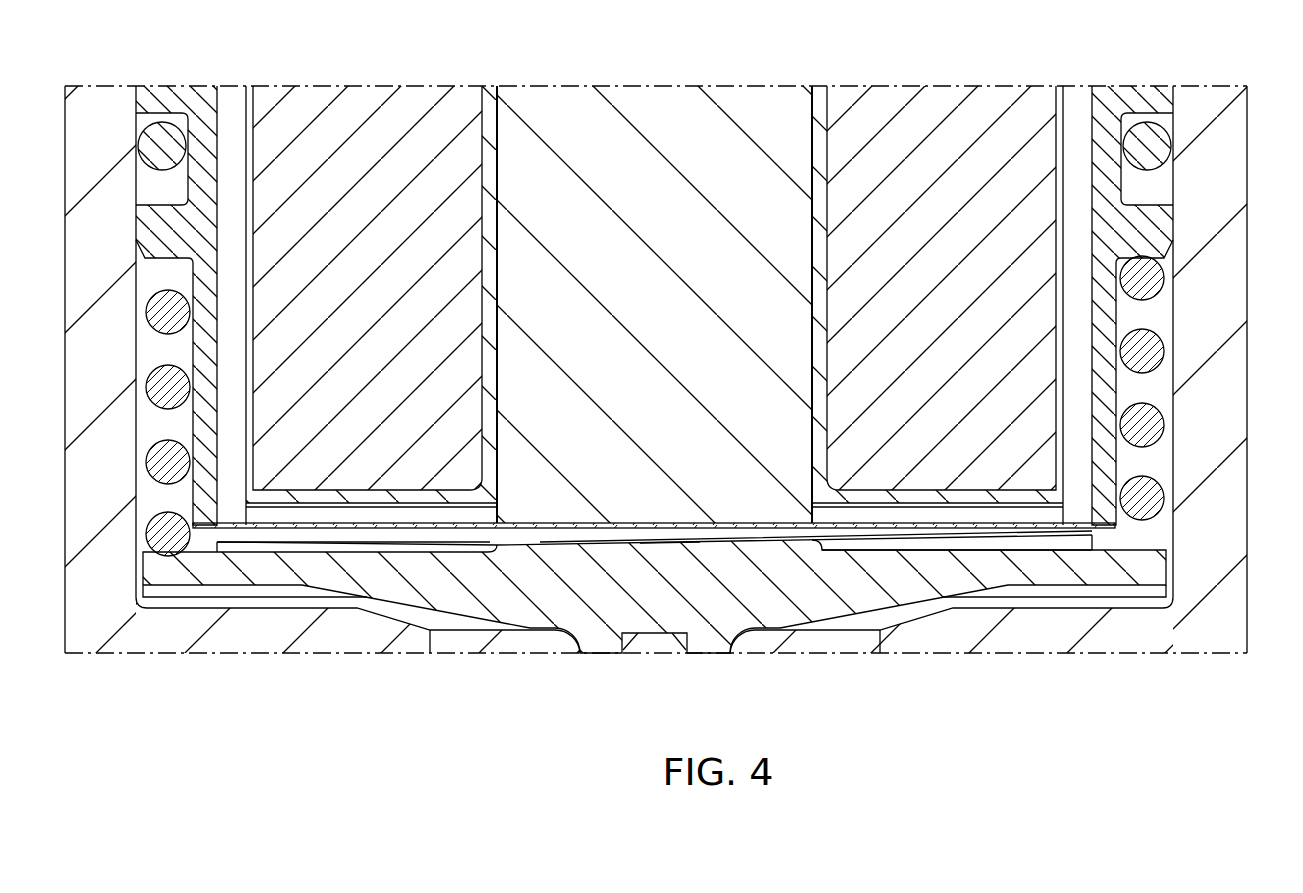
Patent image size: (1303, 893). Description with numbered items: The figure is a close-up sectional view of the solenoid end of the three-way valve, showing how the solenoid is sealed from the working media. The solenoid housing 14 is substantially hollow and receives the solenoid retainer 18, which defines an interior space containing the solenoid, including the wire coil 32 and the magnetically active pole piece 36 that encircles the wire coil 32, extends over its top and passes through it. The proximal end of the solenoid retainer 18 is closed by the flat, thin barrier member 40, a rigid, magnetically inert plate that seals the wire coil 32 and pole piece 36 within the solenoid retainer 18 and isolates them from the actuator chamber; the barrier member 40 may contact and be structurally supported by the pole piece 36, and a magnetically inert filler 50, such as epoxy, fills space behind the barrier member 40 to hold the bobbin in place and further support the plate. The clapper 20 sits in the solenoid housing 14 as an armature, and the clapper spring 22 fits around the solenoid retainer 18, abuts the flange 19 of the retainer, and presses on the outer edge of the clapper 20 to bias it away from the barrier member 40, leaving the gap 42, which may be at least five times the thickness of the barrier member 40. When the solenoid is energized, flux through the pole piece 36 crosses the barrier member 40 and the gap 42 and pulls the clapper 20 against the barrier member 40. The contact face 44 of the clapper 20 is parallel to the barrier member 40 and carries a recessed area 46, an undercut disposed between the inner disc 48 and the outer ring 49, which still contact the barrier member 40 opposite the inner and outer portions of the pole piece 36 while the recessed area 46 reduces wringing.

The solenoid housing 14 is at (63, 151).
The solenoid retainer 18 is at (207, 288).
The flange 19 is at (172, 95).
The clapper 20 is at (850, 612).
The clapper spring 22 is at (160, 318).
The wire coil 32 is at (421, 98).
The pole piece 36 is at (238, 97).
The barrier member 40 is at (207, 530).
The gap 42 is at (1093, 537).
The contact face 44 is at (547, 542).
The recessed area 46 is at (353, 548).
The inner disc 48 is at (672, 552).
The outer ring 49 is at (245, 555).
The filler 50 is at (275, 512).